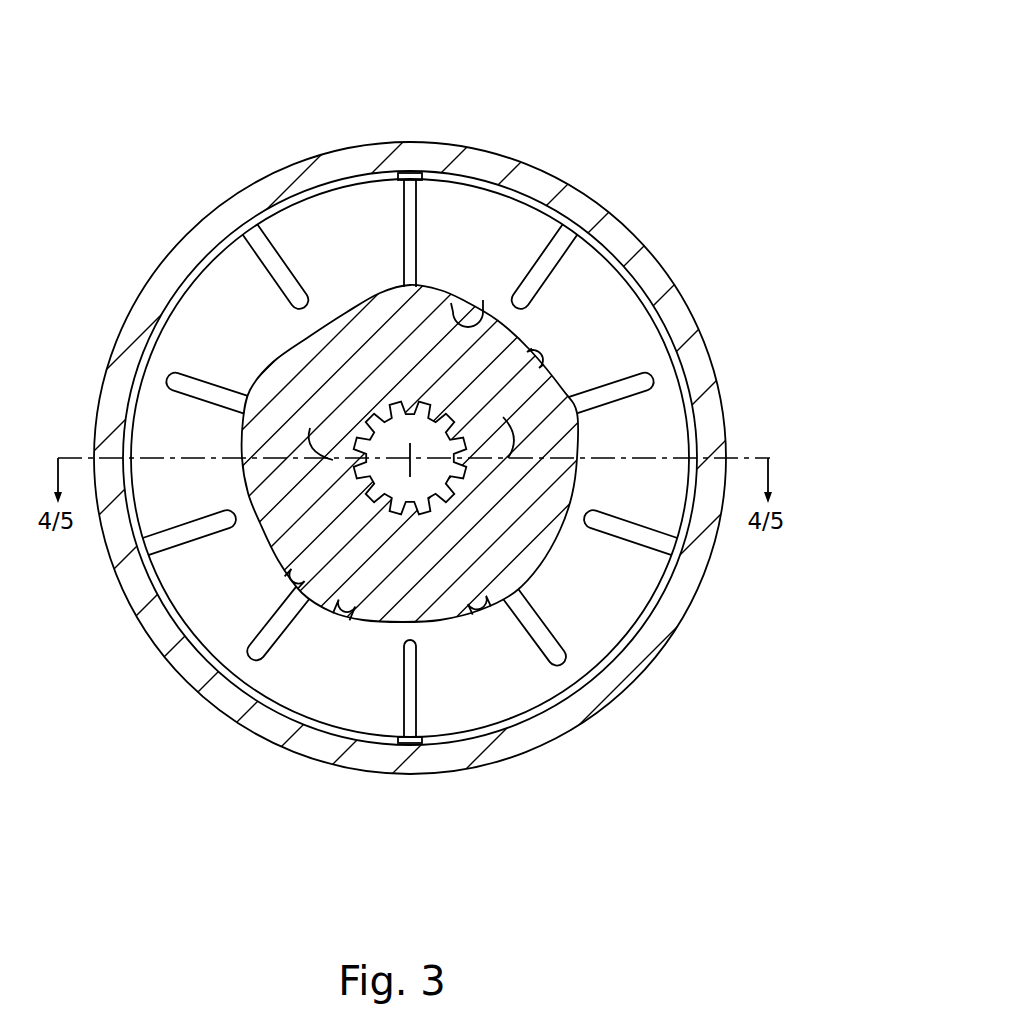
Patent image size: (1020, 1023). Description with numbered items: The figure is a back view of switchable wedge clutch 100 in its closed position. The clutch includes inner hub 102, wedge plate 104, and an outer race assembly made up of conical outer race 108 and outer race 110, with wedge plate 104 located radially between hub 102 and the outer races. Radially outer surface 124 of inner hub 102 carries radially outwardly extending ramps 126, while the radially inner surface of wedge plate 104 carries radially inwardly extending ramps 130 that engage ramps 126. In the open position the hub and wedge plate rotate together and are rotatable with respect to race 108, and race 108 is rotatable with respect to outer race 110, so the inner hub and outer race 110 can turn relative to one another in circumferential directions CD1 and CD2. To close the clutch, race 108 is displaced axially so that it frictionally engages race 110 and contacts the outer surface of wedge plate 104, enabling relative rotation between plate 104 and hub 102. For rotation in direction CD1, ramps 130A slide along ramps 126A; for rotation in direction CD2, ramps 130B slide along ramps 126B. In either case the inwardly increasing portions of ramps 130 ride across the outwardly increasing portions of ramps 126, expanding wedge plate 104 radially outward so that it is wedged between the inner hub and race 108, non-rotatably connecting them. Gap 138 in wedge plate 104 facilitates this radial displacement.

The switchable wedge clutch 100 is at (653, 103).
The inner hub 102 is at (257, 543).
The wedge plate 104 is at (300, 193).
The conical outer race 108 is at (384, 175).
The outer race 110 is at (657, 257).
The radially outer surface 124 is at (483, 300).
The ramps 126 is at (292, 584).
The ramps 126A is at (533, 347).
The ramps 126B is at (490, 606).
The ramps 130 is at (272, 230).
The ramps 130A is at (553, 378).
The ramps 130B is at (453, 620).
The gap 138 is at (412, 215).
The circumferential direction CD1 is at (333, 462).
The circumferential direction CD2 is at (466, 424).